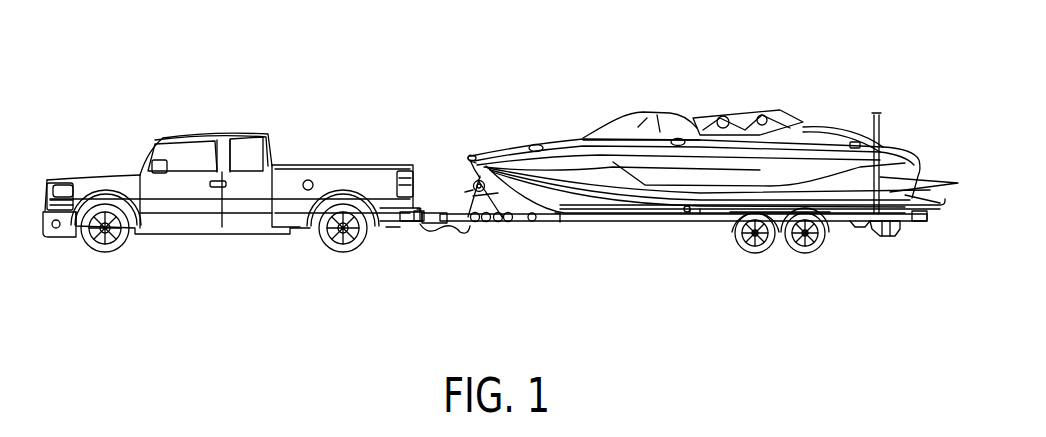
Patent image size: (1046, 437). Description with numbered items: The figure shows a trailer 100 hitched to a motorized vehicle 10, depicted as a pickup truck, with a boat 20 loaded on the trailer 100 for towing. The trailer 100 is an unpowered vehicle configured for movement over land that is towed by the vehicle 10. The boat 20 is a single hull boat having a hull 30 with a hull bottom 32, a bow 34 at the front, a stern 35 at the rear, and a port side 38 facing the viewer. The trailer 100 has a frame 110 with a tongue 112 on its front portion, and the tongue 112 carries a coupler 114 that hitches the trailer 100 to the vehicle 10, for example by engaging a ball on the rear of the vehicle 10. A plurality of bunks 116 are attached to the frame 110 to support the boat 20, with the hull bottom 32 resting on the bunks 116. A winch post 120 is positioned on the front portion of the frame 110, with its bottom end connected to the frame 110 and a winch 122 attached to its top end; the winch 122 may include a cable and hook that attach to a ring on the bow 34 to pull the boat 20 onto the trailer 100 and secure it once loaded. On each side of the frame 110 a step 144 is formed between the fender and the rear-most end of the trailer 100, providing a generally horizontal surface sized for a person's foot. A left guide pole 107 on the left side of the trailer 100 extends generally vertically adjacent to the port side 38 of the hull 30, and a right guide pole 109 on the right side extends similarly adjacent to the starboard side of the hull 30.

The vehicle 10 is at (220, 133).
The boat 20 is at (713, 110).
The hull 30 is at (707, 170).
The hull bottom 32 is at (687, 214).
The bow 34 is at (497, 153).
The stern 35 is at (916, 148).
The port side 38 is at (755, 185).
The trailer 100 is at (679, 197).
The left guide pole 107 is at (878, 176).
The right guide pole 109 is at (830, 135).
The frame 110 is at (652, 222).
The tongue 112 is at (444, 224).
The coupler 114 is at (424, 212).
The bunks 116 is at (558, 214).
The winch post 120 is at (490, 226).
The winch 122 is at (482, 170).
The step 144 is at (853, 221).